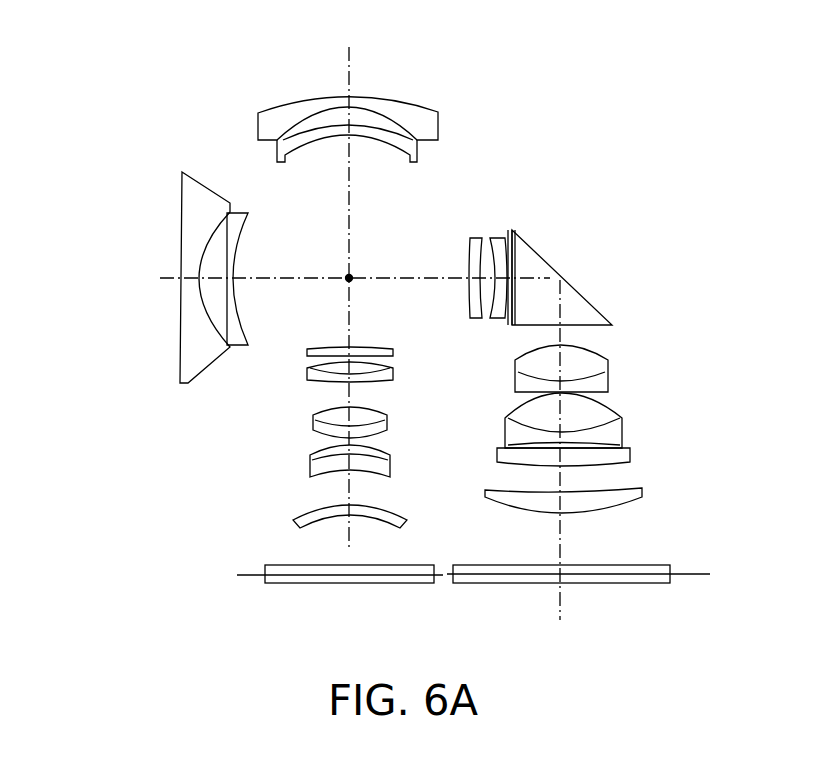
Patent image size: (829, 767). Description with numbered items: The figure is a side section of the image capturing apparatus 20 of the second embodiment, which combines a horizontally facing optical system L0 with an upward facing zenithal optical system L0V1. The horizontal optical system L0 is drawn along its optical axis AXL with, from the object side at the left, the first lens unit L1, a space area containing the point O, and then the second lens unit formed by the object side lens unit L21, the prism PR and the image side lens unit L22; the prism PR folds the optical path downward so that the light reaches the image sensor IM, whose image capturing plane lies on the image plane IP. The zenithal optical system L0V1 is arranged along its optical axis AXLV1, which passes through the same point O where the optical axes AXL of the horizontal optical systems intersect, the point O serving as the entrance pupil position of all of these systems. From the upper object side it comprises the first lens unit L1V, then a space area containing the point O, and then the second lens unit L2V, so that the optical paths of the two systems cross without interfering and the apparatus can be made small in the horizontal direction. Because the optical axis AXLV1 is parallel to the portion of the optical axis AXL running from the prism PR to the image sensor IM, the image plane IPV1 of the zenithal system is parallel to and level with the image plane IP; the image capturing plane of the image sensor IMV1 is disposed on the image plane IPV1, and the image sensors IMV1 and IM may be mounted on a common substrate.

The image capturing apparatus 20 is at (177, 83).
The optical system L0 is at (160, 257).
The first lens unit L1 is at (252, 170).
The optical axis AXL is at (277, 280).
The point O is at (365, 266).
The optical axis AXLV1 is at (395, 28).
The zenithal optical system L0V1 is at (385, 93).
The first lens unit L1V is at (384, 104).
The second lens unit L2V is at (407, 537).
The object side lens unit L21 is at (509, 225).
The prism PR is at (572, 298).
The image side lens unit L22 is at (650, 340).
The image plane IPV1 is at (237, 575).
The image sensor IMV1 is at (330, 583).
The image sensor IM is at (647, 587).
The image plane IP is at (695, 577).